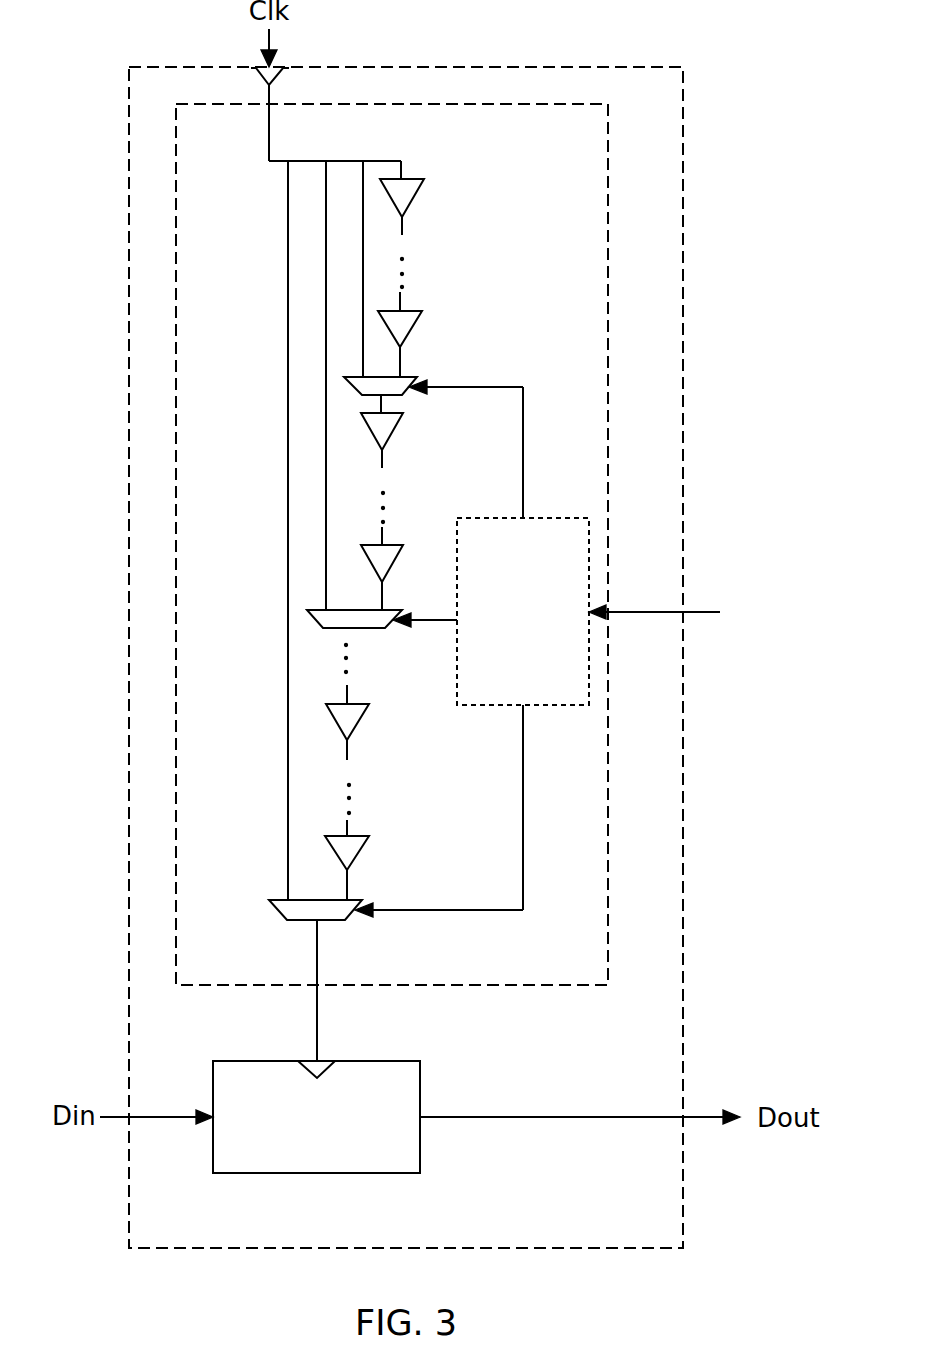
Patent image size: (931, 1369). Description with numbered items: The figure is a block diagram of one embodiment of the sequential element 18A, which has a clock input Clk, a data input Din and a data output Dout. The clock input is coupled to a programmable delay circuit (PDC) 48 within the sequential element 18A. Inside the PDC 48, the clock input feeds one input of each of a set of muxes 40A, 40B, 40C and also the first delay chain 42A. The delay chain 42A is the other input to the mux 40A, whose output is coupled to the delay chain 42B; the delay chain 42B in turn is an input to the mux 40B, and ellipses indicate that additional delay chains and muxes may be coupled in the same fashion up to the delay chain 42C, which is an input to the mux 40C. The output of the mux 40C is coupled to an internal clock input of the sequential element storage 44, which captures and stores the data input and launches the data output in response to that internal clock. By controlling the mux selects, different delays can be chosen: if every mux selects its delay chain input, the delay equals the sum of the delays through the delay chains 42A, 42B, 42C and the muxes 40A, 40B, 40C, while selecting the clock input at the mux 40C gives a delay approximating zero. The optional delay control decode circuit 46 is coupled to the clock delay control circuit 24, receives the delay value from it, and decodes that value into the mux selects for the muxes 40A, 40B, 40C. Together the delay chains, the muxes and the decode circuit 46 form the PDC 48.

The sequential element 18A is at (626, 142).
The programmable delay circuit 48 is at (570, 177).
The delay chain 42A is at (429, 162).
The delay chain 42B is at (397, 400).
The delay chain 42C is at (368, 692).
The mux 40A is at (467, 364).
The mux 40B is at (378, 640).
The mux 40C is at (345, 927).
The delay control decode circuit 46 is at (507, 677).
The sequential element storage 44 is at (378, 1131).
The clock delay control circuit 24 is at (704, 554).